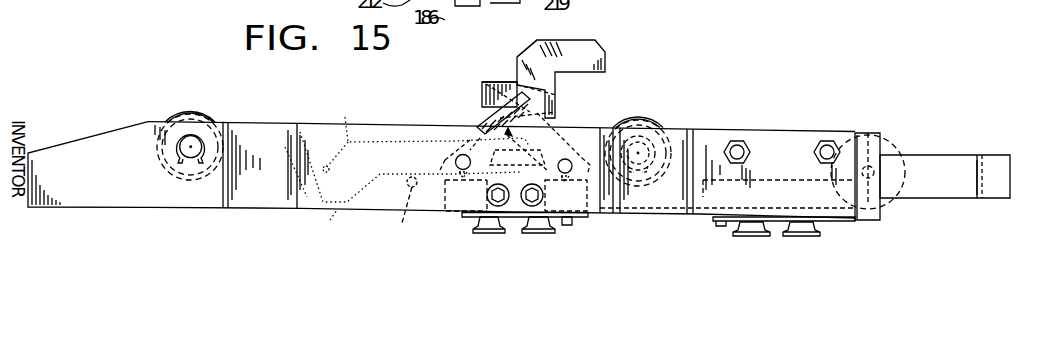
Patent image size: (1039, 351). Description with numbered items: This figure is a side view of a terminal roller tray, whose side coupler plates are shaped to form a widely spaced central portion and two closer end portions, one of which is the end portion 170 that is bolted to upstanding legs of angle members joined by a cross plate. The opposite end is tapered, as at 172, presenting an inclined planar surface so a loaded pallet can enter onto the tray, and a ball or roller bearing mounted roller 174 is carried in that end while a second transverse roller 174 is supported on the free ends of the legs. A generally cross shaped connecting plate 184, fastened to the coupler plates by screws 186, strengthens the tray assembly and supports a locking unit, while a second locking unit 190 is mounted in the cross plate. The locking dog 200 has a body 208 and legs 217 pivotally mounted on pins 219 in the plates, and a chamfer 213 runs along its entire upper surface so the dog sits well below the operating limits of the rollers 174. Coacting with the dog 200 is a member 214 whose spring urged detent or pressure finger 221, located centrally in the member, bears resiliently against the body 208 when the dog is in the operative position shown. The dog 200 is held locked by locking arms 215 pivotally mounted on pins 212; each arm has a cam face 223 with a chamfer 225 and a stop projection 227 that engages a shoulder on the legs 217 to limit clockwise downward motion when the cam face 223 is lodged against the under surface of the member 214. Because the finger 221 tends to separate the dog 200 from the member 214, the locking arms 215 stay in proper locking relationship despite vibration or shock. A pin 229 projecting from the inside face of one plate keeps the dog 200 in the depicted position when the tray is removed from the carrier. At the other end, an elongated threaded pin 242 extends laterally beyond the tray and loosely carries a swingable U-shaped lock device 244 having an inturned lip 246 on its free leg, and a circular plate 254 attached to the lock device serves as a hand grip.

The end portion 170 is at (792, 115).
The taper 172 is at (117, 125).
The roller 174 is at (205, 121).
The connecting plate 184 is at (420, 225).
The screws 186 is at (526, 203).
The second locking unit 190 is at (822, 228).
The dog 200 is at (586, 27).
The body 208 is at (610, 81).
The pins 212 is at (460, 155).
The chamfer 213 is at (535, 45).
The member 214 is at (484, 90).
The locking arms 215 is at (480, 124).
The legs 217 is at (500, 162).
The pins 219 is at (570, 158).
The detent or pressure finger 221 is at (558, 96).
The cam face 223 is at (558, 111).
The chamfer 225 is at (522, 138).
The stop projection 227 is at (492, 81).
The pin 229 is at (404, 214).
The elongated pin 242 is at (868, 132).
The U-shaped lock device 244 is at (945, 155).
The inturned lip 246 is at (972, 190).
The circular plate 254 is at (890, 150).